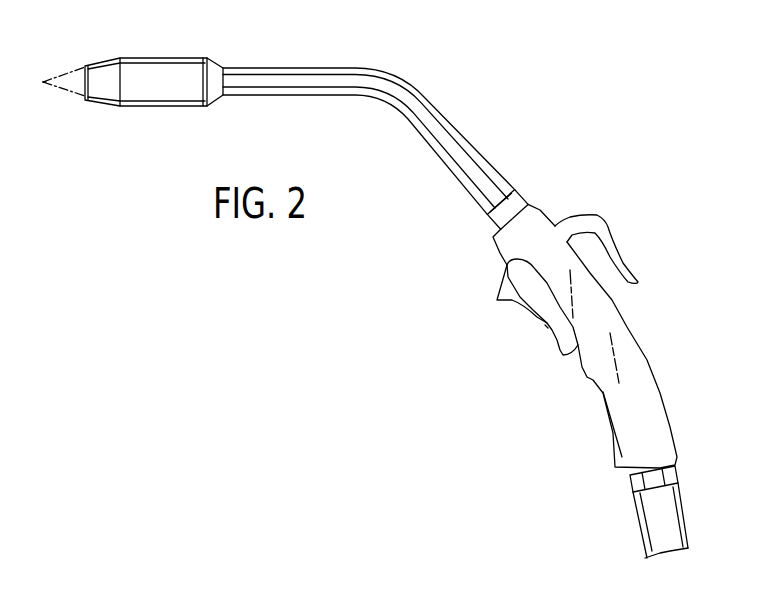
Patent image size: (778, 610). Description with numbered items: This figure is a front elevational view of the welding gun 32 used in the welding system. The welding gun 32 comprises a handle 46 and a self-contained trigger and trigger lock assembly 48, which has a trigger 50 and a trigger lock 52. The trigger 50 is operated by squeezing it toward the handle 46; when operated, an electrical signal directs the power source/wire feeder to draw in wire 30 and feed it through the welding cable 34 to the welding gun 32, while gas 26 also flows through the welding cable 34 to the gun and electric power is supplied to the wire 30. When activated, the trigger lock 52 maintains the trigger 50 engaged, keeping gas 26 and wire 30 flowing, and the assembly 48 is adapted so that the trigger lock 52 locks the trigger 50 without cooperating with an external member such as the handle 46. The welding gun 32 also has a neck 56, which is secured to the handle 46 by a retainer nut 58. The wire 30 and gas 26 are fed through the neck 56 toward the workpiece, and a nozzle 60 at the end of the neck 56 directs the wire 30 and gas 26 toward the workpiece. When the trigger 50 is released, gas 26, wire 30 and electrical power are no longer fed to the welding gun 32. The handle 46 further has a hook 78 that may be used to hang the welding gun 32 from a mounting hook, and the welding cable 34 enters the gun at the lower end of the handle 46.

The gas 26 is at (68, 75).
The wire 30 is at (43, 81).
The welding gun 32 is at (599, 82).
The welding cable 34 is at (665, 508).
The handle 46 is at (643, 370).
The self-contained trigger and trigger lock assembly 48 is at (548, 327).
The trigger 50 is at (562, 357).
The trigger lock 52 is at (497, 300).
The neck 56 is at (403, 93).
The retainer nut 58 is at (490, 218).
The nozzle 60 is at (153, 60).
The hook 78 is at (593, 217).